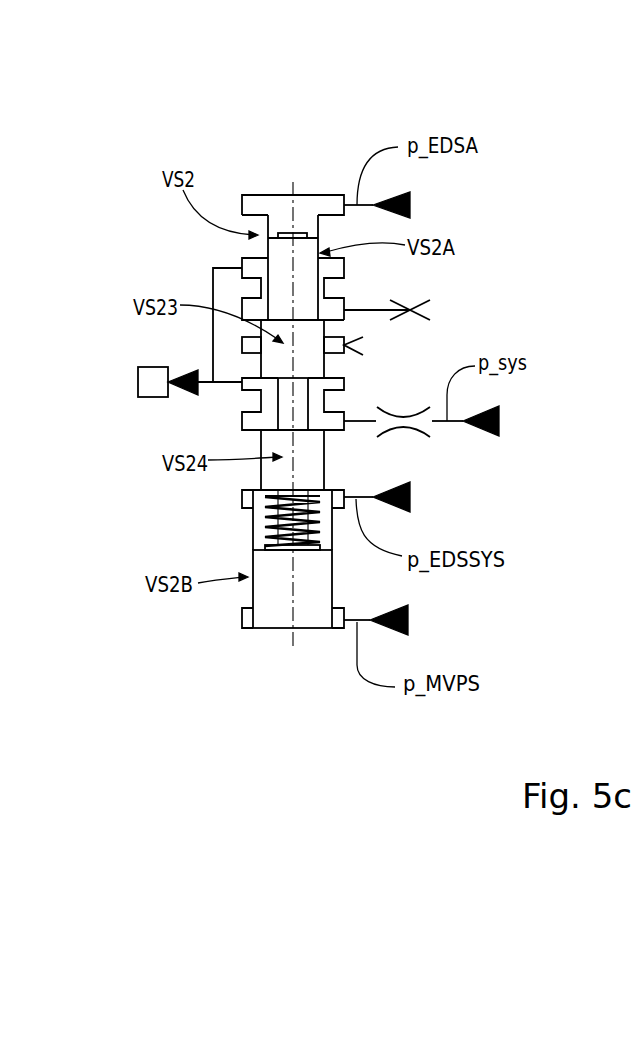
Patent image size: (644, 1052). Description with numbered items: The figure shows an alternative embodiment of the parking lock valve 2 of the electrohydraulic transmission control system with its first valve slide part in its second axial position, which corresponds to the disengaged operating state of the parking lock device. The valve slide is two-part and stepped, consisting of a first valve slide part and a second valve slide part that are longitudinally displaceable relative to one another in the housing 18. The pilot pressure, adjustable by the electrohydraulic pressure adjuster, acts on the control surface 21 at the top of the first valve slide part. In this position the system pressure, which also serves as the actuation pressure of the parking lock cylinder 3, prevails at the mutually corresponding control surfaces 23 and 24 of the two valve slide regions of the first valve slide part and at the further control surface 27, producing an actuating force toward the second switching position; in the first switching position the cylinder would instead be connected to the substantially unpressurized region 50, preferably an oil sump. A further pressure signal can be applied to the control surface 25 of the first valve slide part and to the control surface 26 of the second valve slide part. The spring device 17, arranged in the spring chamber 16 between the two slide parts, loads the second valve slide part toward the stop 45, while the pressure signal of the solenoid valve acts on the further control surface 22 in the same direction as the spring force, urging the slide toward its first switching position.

The parking lock valve 2 is at (210, 112).
The control surface 21 is at (285, 232).
The housing 18 is at (330, 195).
The further control surface 27 is at (321, 318).
The substantially unpressurized region 50 is at (345, 345).
The control surface 23 is at (313, 380).
The control surface 26 is at (345, 490).
The control surface 24 is at (270, 430).
The control surface 25 is at (252, 508).
The spring chamber 16 is at (262, 532).
The spring device 17 is at (282, 550).
The stop 45 is at (277, 628).
The further control surface 22 is at (303, 628).
The parking lock cylinder 3 is at (153, 367).